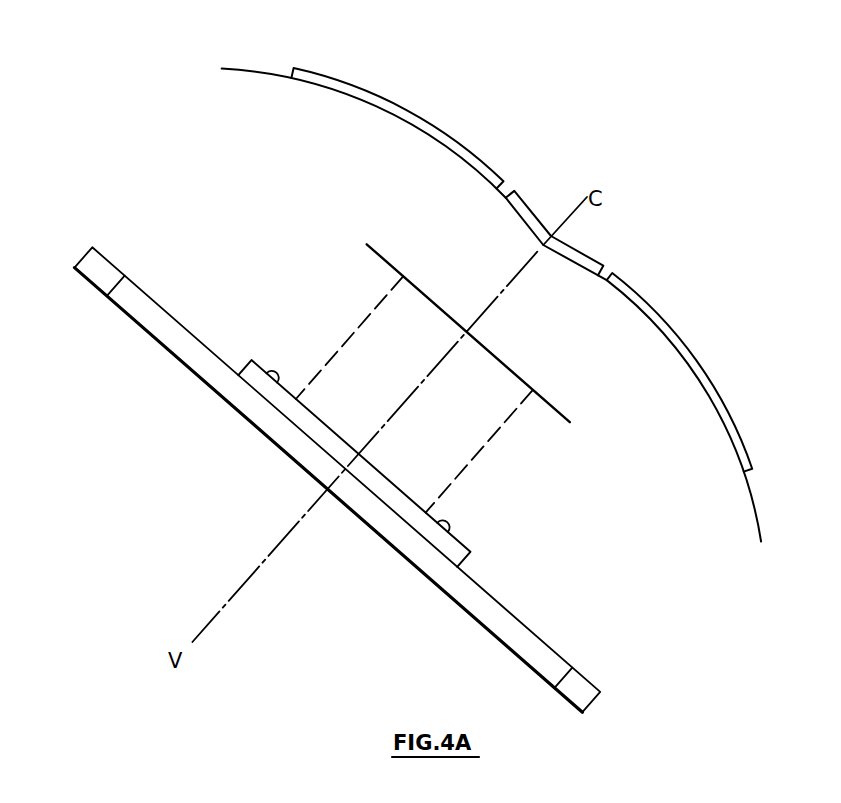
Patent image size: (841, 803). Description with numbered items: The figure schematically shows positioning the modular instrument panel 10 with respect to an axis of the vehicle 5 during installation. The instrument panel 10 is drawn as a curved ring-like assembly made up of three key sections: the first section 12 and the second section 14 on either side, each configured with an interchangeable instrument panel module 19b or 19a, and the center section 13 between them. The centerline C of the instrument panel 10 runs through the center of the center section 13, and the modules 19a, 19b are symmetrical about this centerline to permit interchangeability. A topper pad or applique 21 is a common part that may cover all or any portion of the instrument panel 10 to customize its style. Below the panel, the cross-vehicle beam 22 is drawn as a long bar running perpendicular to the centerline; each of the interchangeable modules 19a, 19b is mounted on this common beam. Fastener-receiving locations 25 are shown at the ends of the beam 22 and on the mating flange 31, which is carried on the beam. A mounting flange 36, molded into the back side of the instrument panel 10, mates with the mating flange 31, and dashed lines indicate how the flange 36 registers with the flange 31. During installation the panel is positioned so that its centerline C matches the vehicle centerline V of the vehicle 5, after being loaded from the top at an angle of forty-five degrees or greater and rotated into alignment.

The vehicle 5 is at (158, 192).
The modular vehicle instrument panel 10 is at (605, 145).
The first section 12 is at (403, 101).
The center section 13 is at (531, 203).
The second section 14 is at (741, 417).
The interchangeable instrument panel module 19a is at (682, 341).
The interchangeable instrument panel module 19b is at (341, 73).
The topper pad or applique 21 is at (754, 508).
The cross-vehicle beam 22 is at (385, 549).
The fastener-receiving location 25 is at (103, 258).
The mating flange 31 is at (470, 552).
The mounting flange 36 is at (555, 417).